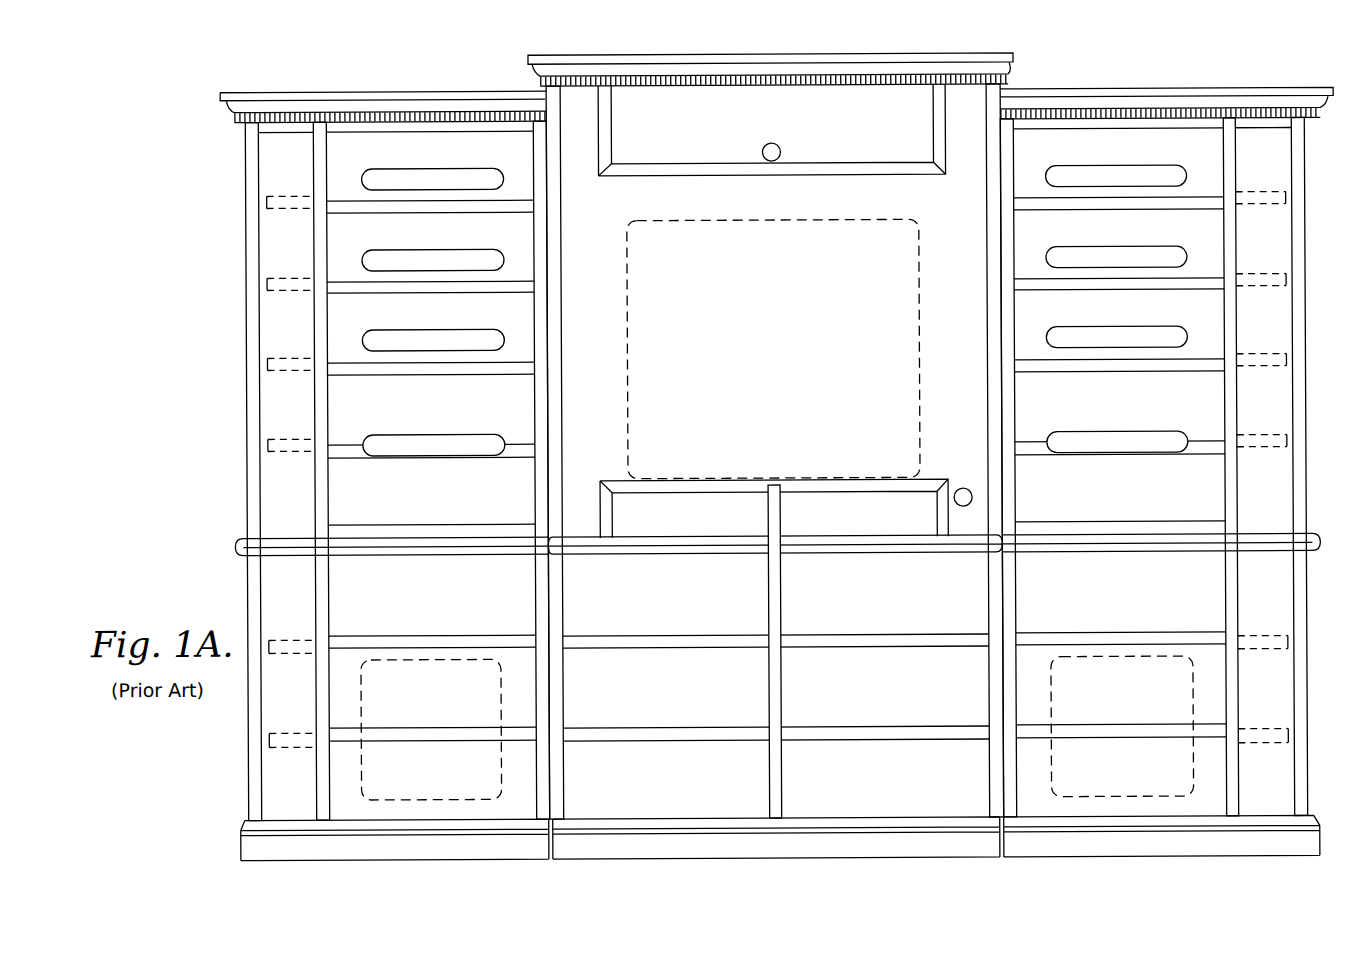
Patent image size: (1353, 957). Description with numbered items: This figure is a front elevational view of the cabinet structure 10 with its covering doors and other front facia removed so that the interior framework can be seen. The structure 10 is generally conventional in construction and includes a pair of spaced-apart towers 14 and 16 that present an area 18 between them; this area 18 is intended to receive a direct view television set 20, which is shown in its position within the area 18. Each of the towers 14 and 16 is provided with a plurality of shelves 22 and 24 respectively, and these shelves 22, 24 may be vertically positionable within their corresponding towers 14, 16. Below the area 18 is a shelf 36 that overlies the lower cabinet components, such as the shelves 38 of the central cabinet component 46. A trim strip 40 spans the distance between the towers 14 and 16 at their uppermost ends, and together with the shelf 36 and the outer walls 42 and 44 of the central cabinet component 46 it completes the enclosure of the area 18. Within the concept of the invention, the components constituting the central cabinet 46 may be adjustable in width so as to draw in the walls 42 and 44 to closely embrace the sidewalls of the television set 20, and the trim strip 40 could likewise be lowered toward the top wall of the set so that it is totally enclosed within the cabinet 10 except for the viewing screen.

The cabinet structure 10 is at (236, 399).
The tower 14 is at (346, 81).
The tower 16 is at (1237, 82).
The area 18 is at (780, 193).
The direct view television set 20 is at (777, 394).
The shelves 22 is at (470, 435).
The shelves 24 is at (1178, 430).
The shelf 36 is at (927, 539).
The shelves 38 is at (797, 732).
The trim strip 40 is at (525, 68).
The outer wall 42 is at (557, 413).
The outer wall 44 is at (990, 313).
The central cabinet component 46 is at (668, 874).